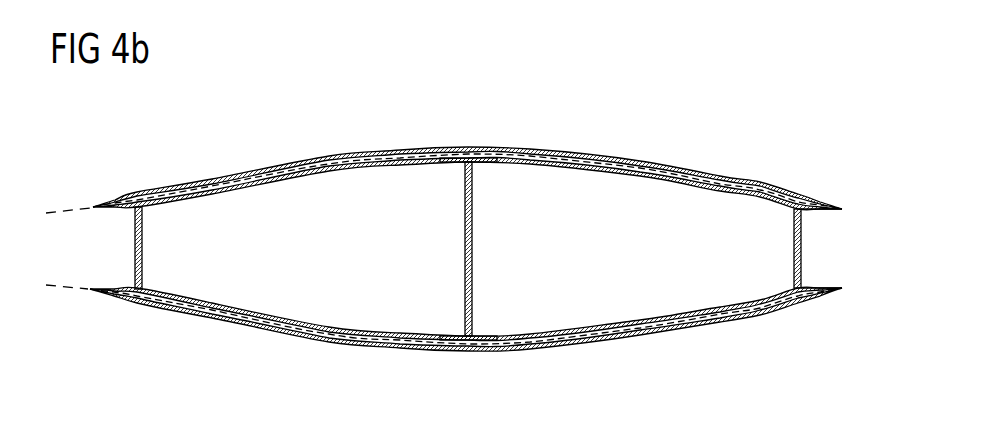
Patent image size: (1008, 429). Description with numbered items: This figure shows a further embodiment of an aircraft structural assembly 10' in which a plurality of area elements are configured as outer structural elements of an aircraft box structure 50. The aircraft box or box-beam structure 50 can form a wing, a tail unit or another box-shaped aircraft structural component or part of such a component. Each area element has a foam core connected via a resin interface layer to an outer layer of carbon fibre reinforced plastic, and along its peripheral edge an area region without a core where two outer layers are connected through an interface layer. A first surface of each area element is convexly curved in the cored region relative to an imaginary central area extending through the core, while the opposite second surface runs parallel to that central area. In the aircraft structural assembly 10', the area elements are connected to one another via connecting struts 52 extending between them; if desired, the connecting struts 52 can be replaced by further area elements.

The aircraft structural assembly 10' is at (445, 218).
The connecting strut 52 is at (143, 250).
The aircraft box structure 50 is at (800, 176).